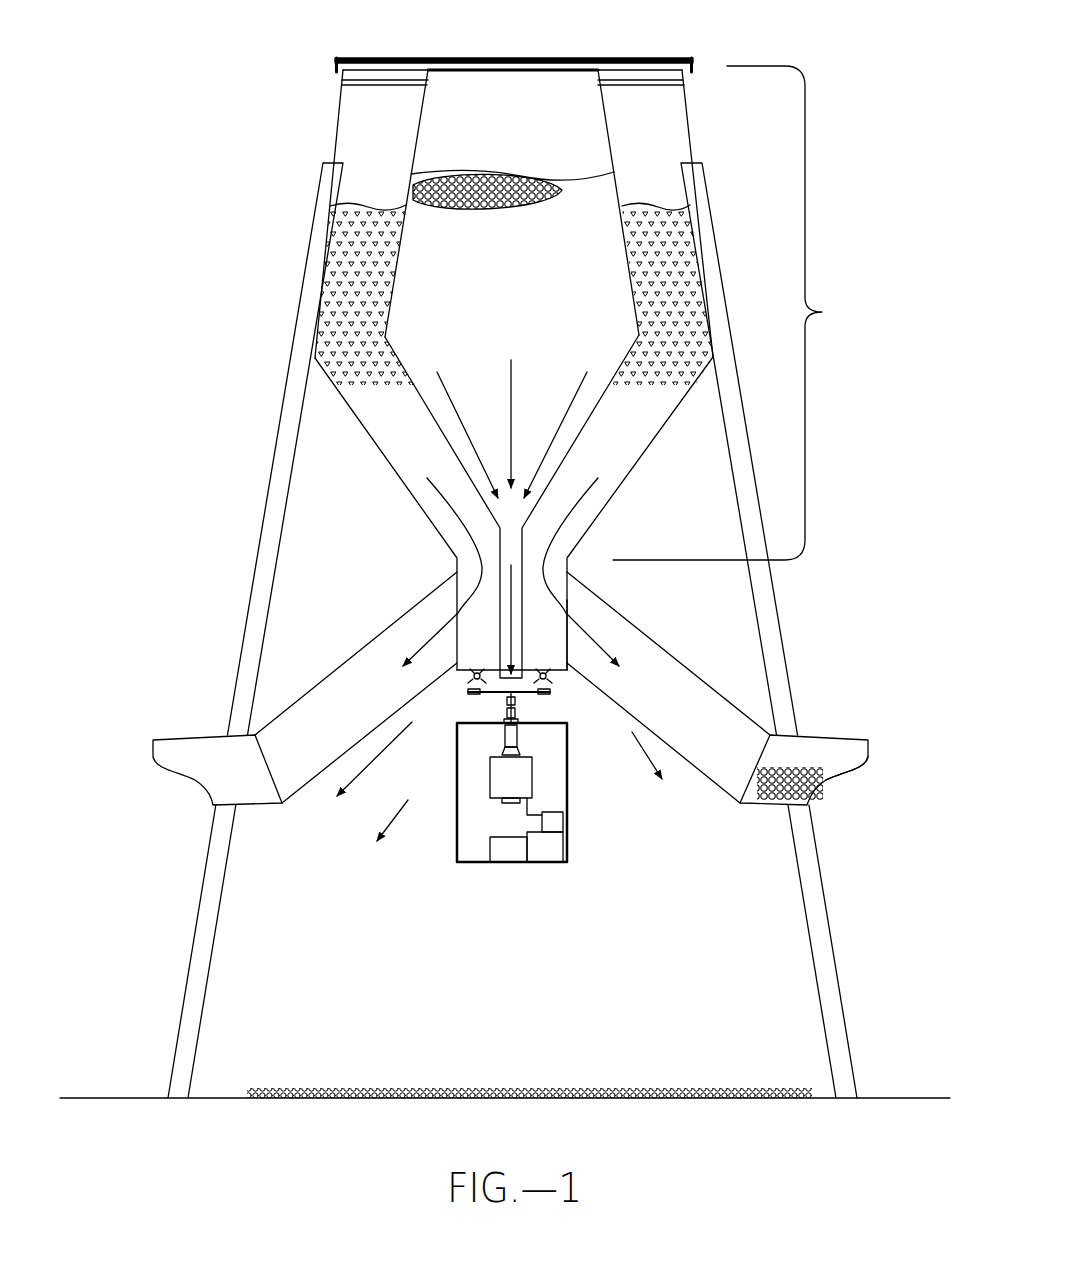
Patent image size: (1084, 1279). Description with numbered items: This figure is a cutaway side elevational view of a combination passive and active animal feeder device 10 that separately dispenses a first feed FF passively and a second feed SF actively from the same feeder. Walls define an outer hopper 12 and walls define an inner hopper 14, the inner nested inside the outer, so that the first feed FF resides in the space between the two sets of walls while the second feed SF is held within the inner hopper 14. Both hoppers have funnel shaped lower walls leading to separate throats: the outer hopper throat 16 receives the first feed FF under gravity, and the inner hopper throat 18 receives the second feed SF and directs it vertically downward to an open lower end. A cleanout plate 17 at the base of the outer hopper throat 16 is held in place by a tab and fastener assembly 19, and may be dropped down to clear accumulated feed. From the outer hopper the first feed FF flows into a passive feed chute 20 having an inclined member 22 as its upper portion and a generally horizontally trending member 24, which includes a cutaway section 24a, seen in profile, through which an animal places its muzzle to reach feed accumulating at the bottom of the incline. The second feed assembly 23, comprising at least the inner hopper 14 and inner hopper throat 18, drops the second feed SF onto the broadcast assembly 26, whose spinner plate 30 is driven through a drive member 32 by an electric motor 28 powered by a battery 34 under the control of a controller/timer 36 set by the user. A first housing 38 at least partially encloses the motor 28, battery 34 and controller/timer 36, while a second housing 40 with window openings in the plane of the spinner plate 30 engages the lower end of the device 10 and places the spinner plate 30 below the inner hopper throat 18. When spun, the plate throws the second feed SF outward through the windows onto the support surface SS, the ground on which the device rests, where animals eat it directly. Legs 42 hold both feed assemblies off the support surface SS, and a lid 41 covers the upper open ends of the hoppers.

The combination passive and active animal feeder device 10 is at (176, 327).
The outer hopper 12 is at (737, 313).
The inner hopper 14 is at (414, 118).
The outer hopper throat 16 is at (569, 596).
The cleanout plate 17 is at (491, 664).
The inner hopper throat 18 is at (528, 632).
The tab and fastener assembly 19 is at (569, 657).
The passive feed chute 20 is at (728, 716).
The inclined member 22 is at (749, 734).
The second feed assembly 23 is at (643, 794).
The horizontally trending member 24 is at (836, 752).
The cutaway section 24a is at (870, 769).
The broadcast assembly 26 is at (455, 685).
The electric motor 28 is at (521, 786).
The spinner plate 30 is at (541, 701).
The drive member 32 is at (529, 716).
The battery 34 is at (506, 858).
The controller/timer 36 is at (551, 829).
The first housing 38 is at (569, 793).
The second housing 40 is at (569, 710).
The top cover plate 41 is at (378, 56).
The legs 42 is at (257, 537).
The second feed SF is at (470, 182).
The first feed FF is at (358, 217).
The support surface SS is at (352, 1123).